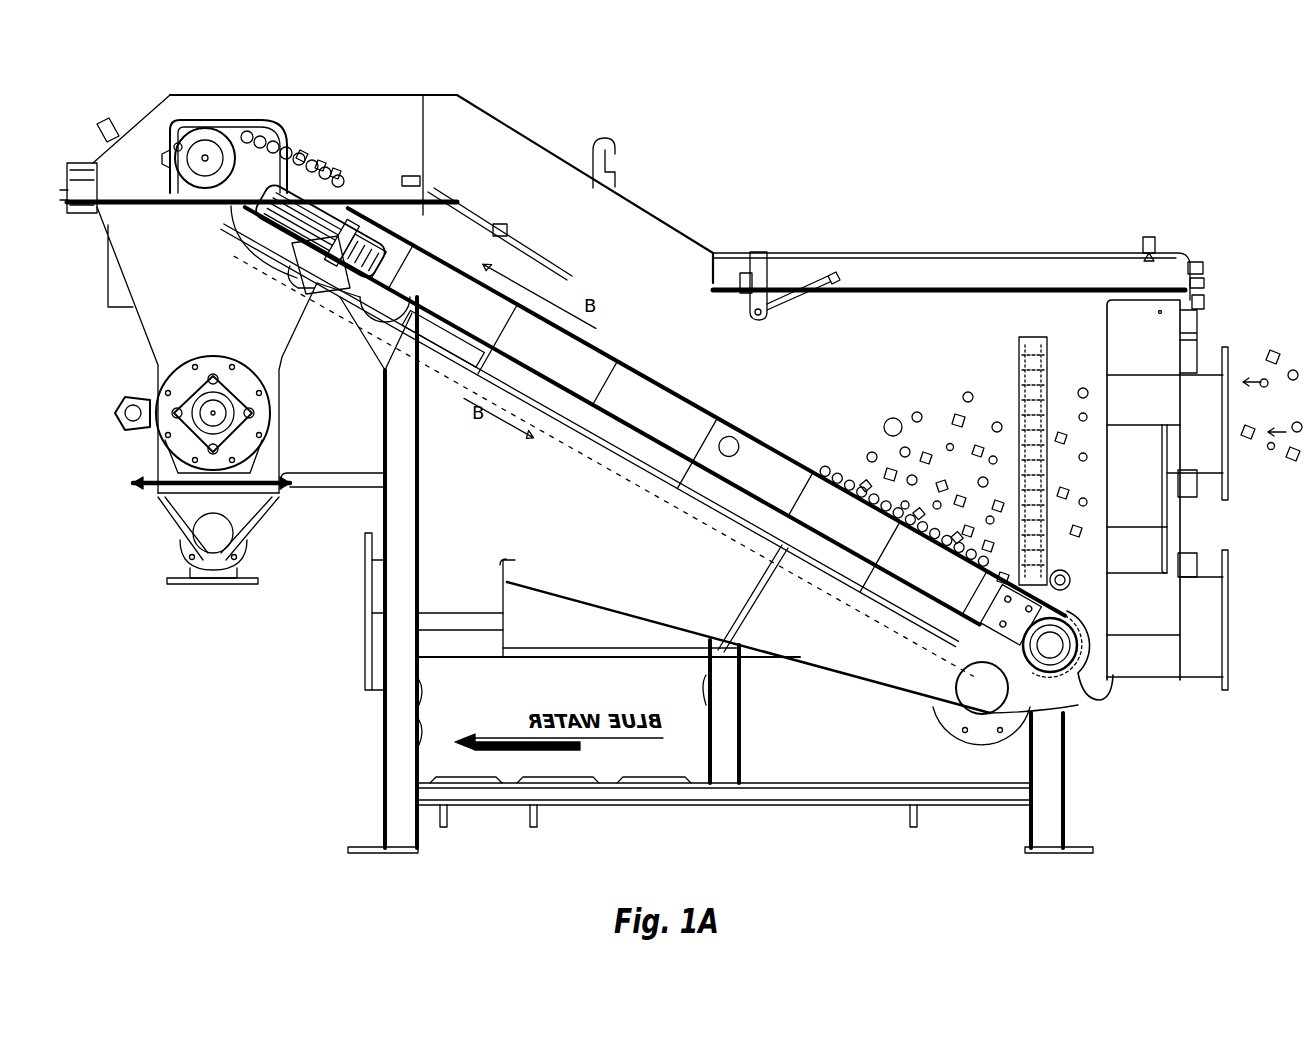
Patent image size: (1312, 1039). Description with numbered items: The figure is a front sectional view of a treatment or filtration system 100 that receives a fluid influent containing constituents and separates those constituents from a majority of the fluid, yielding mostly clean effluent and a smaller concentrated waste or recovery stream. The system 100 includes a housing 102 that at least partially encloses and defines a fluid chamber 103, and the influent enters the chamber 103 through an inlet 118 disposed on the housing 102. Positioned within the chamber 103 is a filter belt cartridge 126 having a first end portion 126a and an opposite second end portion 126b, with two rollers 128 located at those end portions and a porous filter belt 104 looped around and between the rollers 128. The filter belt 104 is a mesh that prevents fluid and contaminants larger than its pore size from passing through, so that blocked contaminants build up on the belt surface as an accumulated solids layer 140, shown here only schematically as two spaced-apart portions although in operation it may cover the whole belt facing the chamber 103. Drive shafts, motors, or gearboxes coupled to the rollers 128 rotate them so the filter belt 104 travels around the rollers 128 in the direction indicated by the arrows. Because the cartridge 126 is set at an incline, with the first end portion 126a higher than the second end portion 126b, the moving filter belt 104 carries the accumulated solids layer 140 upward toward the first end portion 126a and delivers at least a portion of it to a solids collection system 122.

The filtration system 100 is at (1047, 150).
The housing 102 is at (660, 218).
The fluid chamber 103 is at (905, 325).
The filter belt 104 is at (533, 428).
The inlet 118 is at (1232, 413).
The solids collection system 122 is at (160, 329).
The filter belt cartridge 126 is at (680, 420).
The first end portion 126a is at (222, 118).
The second end portion 126b is at (1052, 690).
The rollers 128 is at (177, 145).
The accumulated solids layer 140 is at (340, 142).